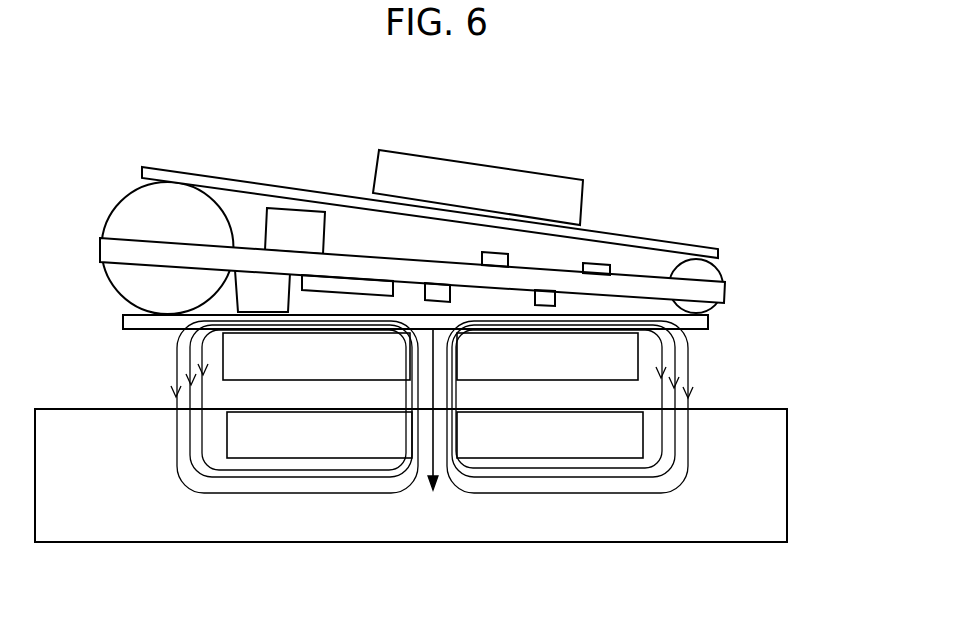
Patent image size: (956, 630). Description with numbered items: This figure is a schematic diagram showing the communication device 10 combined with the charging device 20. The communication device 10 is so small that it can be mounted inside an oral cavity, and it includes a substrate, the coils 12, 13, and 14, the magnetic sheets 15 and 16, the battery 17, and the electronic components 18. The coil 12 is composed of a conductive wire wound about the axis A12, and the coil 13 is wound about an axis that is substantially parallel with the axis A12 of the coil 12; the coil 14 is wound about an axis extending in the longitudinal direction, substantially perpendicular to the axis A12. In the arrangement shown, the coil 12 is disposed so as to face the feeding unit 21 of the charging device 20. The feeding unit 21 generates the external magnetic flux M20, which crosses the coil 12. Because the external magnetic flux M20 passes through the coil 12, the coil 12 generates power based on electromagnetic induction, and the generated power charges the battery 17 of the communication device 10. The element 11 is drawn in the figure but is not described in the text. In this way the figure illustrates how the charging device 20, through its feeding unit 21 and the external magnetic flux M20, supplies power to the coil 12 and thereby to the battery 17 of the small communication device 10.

The communication device 10 is at (200, 133).
The carrier 11 is at (378, 232).
The coil 12 is at (568, 353).
The coil 13 is at (545, 190).
The coil 14 is at (710, 275).
The magnetic sheet 15 is at (170, 322).
The magnetic sheet 16 is at (203, 178).
The battery 17 is at (158, 213).
The electronic components 18 is at (262, 290).
The charging device 20 is at (227, 502).
The feeding unit 21 is at (572, 431).
The axis A12 is at (433, 392).
The external magnetic flux M20 is at (467, 492).